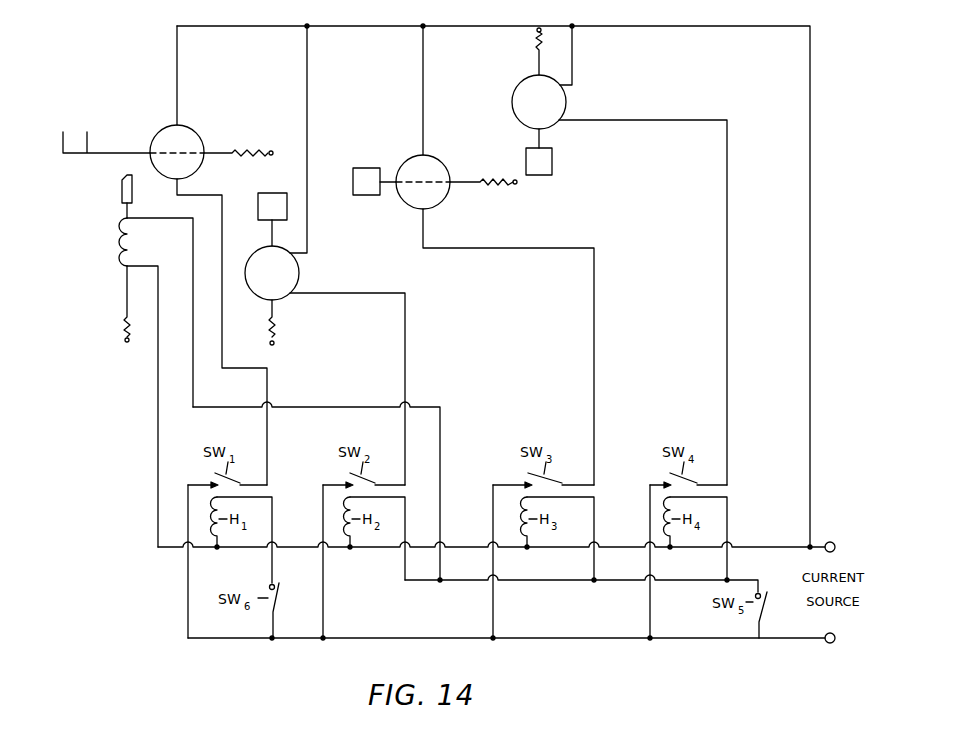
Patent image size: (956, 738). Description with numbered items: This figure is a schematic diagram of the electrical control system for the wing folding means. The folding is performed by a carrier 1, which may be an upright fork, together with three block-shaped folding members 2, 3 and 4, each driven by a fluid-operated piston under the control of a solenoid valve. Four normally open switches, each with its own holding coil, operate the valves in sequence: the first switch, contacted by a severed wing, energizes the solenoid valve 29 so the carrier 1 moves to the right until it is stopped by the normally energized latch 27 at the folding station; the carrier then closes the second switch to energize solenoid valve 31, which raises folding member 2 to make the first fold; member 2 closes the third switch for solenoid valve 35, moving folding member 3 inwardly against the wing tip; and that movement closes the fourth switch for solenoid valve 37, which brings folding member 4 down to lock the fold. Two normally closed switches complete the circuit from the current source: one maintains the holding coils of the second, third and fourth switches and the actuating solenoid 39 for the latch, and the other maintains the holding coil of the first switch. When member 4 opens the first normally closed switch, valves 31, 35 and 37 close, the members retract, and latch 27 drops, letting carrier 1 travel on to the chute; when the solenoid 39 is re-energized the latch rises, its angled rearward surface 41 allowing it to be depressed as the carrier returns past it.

The carrier 1 is at (76, 130).
The folding member 2 is at (270, 191).
The folding member 3 is at (366, 166).
The folding member 4 is at (554, 163).
The latch 27 is at (112, 240).
The solenoid valve 29 is at (192, 126).
The solenoid valve 31 is at (290, 272).
The solenoid valve 35 is at (441, 161).
The solenoid valve 37 is at (517, 88).
The actuating solenoid 39 is at (118, 261).
The rearward surface 41 is at (120, 181).